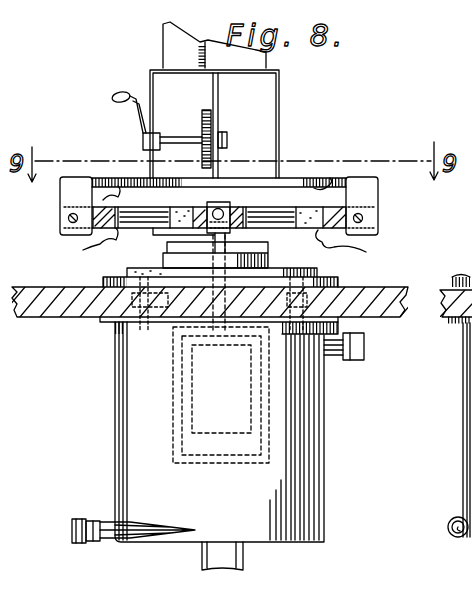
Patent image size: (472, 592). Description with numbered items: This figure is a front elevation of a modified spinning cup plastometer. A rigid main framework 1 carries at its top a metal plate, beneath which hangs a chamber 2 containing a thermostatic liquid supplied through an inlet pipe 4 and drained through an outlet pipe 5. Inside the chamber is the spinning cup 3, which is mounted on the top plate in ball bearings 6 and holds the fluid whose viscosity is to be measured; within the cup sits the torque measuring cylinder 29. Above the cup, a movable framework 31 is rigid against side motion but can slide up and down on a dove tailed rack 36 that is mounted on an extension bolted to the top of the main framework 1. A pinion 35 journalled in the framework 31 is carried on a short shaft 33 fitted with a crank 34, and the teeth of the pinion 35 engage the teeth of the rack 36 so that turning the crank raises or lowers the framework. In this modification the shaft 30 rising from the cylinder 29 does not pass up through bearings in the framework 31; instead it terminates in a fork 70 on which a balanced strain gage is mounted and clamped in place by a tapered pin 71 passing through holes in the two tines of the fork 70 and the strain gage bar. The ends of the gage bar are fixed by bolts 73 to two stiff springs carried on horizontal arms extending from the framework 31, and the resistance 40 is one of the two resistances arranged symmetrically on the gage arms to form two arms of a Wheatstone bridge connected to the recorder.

The main framework 1 is at (56, 308).
The chamber 2 is at (284, 452).
The spinning cup 3 is at (246, 458).
The inlet pipe 4 is at (98, 545).
The outlet pipe 5 is at (350, 360).
The ball bearings 6 is at (149, 308).
The torque measuring cylinder 29 is at (212, 436).
The shaft 30 is at (215, 243).
The movable framework 31 is at (279, 125).
The short shaft 33 is at (163, 157).
The crank 34 is at (129, 106).
The pinion 35 is at (204, 112).
The dove tailed rack 36 is at (202, 51).
The resistance 40 is at (169, 215).
The fork 70 is at (221, 210).
The tapered pin 71 is at (229, 209).
The bolts 73 is at (62, 229).